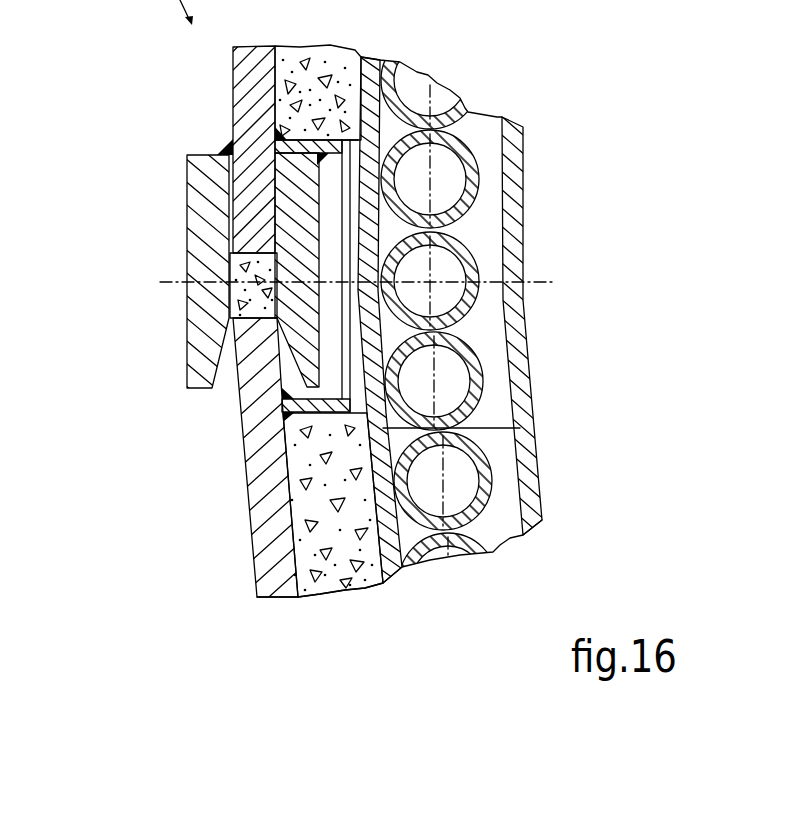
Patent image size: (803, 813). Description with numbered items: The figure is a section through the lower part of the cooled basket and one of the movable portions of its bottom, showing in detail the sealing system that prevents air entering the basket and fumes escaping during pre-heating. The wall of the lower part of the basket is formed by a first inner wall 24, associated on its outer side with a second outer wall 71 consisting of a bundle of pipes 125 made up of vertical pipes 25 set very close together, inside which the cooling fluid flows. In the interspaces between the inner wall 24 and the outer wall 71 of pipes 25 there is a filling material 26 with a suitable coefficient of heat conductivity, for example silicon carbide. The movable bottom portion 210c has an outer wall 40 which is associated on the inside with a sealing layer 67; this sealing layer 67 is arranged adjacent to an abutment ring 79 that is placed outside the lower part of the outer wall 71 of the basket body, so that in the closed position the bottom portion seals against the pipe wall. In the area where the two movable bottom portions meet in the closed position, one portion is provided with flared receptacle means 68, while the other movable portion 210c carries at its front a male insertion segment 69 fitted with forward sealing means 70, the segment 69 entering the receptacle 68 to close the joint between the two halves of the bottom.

The first inner wall 24 is at (509, 163).
The vertical pipes 25 is at (453, 150).
The filling material 26 is at (478, 225).
The outer wall 40 is at (247, 88).
The sealing layer 67 is at (298, 490).
The flared receptacle means 68 is at (207, 340).
The male insertion segment 69 is at (250, 340).
The forward sealing means 70 is at (236, 257).
The second outer wall 71 is at (497, 562).
The abutment ring 79 is at (520, 428).
The bundle of pipes 125 is at (442, 70).
The movable bottom portion 210c is at (213, 590).